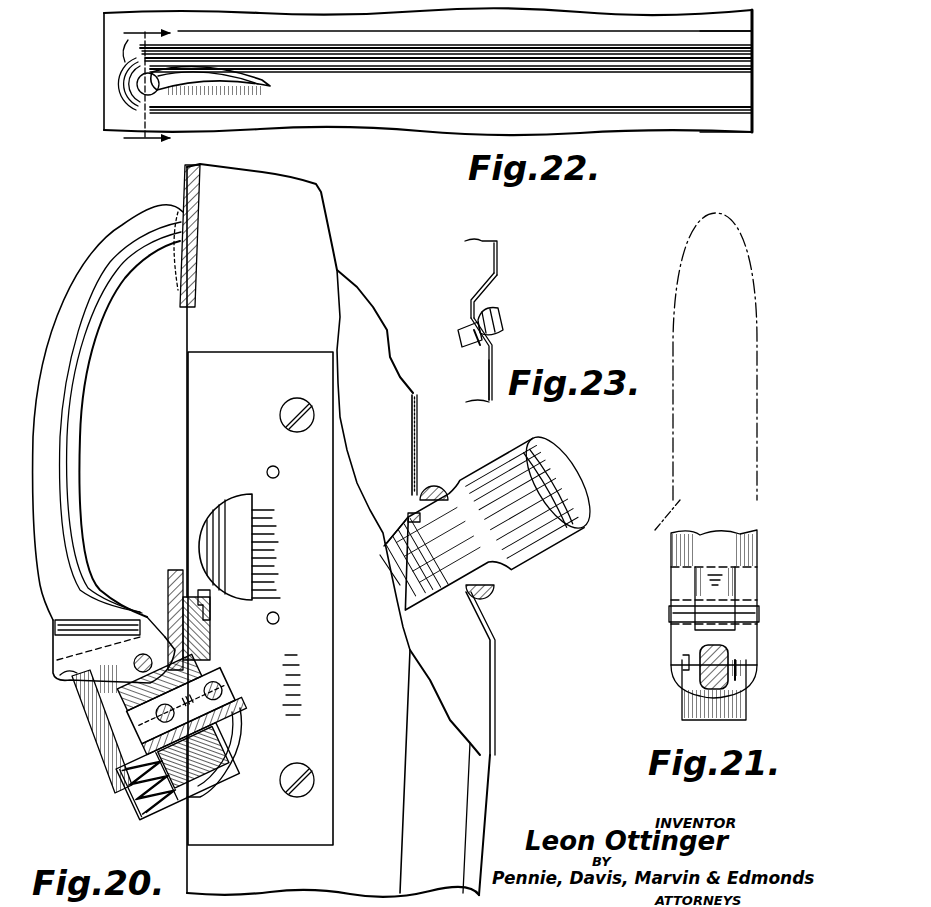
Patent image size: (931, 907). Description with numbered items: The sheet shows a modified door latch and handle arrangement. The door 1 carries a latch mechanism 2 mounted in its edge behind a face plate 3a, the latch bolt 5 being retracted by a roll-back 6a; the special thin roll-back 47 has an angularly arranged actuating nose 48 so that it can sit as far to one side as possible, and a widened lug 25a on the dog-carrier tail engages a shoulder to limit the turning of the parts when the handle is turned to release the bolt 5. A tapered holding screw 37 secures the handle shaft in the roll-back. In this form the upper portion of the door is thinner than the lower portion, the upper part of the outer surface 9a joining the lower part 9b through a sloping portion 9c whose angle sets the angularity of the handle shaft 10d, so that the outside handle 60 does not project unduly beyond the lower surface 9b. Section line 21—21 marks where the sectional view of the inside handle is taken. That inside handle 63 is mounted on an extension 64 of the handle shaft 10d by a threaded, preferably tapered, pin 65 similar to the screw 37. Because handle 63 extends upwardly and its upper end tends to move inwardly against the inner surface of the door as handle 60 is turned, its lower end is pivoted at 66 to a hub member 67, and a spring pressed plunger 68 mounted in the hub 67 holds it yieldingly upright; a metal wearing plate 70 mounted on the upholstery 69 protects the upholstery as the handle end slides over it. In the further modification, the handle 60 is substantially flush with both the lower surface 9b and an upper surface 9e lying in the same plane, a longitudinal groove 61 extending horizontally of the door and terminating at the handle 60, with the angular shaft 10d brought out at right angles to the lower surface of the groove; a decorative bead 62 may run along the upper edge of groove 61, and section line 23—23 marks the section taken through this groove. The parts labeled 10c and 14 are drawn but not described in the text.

In FIG. 20, the door 1 is at (298, 212).
In FIG. 20, the latch mechanism 2 is at (260, 350).
In FIG. 20, the face plate 3a is at (248, 385).
In FIG. 20, the latch bolt 5 is at (238, 506).
In FIG. 20, the roll-back 6a is at (232, 730).
In FIG. 20, the upper part of the outer surface 9a is at (420, 432).
In FIG. 22, the lower part of the outer surface 9b is at (738, 126).
In FIG. 23, the lower part of the outer surface 9b is at (489, 376).
In FIG. 20, the lower part of the outer surface 9b is at (496, 712).
In FIG. 20, the sloping portion 9c is at (496, 614).
In FIG. 22, the upper surface 9e is at (738, 30).
In FIG. 23, the upper surface 9e is at (500, 248).
In FIG. 20, the fastener 10c is at (402, 570).
In FIG. 23, the handle shaft 10d is at (460, 335).
In FIG. 22, the pivot pin 14 is at (135, 86).
In FIG. 23, the pivot pin 14 is at (481, 342).
In FIG. 20, the pivot pin 14 is at (437, 490).
In FIG. 20, the section line 21— 21 is at (148, 568).
In FIG. 22, the section line 23— 23 is at (166, 88).
In FIG. 20, the widened lug 25a is at (204, 606).
In FIG. 20, the tapered holding screw 37 is at (216, 682).
In FIG. 20, the roll-back 47 is at (230, 706).
In FIG. 20, the actuating nose 48 is at (170, 622).
In FIG. 22, the handle 60 is at (272, 82).
In FIG. 23, the handle 60 is at (503, 318).
In FIG. 20, the handle 60 is at (540, 453).
In FIG. 22, the longitudinal groove 61 is at (450, 60).
In FIG. 23, the longitudinal groove 61 is at (482, 302).
In FIG. 22, the decorative bead 62 is at (557, 50).
In FIG. 23, the decorative bead 62 is at (496, 280).
In FIG. 21, the handle 63 is at (705, 546).
In FIG. 20, the handle 63 is at (78, 284).
In FIG. 21, the extension of the handle shaft 64 is at (728, 652).
In FIG. 20, the extension of the handle shaft 64 is at (152, 792).
In FIG. 21, the threaded tapered pin 65 is at (748, 680).
In FIG. 20, the threaded tapered pin 65 is at (226, 687).
In FIG. 21, the pivot 66 is at (670, 618).
In FIG. 20, the pivot 66 is at (135, 659).
In FIG. 21, the hub member 67 is at (672, 646).
In FIG. 20, the hub member 67 is at (118, 742).
In FIG. 20, the spring pressed plunger 68 is at (82, 694).
In FIG. 20, the upholstery 69 is at (203, 273).
In FIG. 20, the wearing plate 70 is at (182, 238).